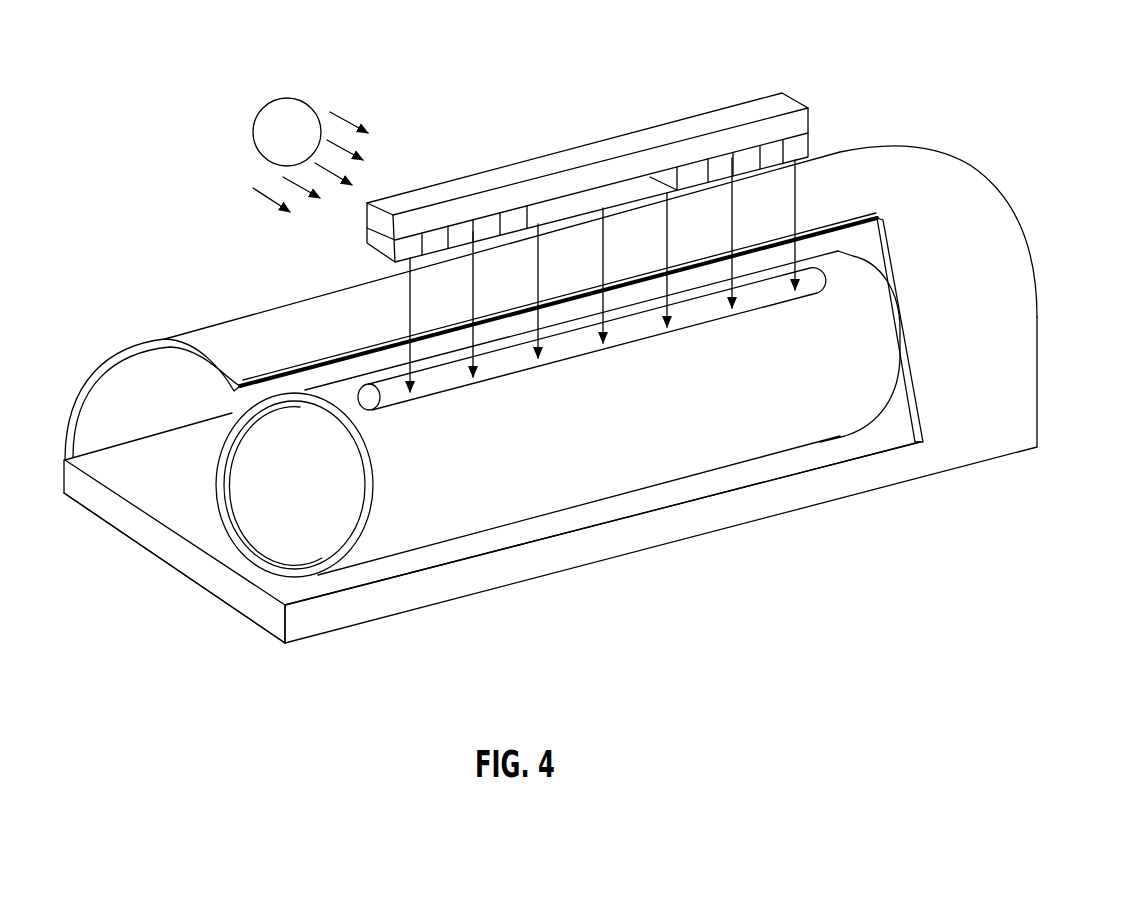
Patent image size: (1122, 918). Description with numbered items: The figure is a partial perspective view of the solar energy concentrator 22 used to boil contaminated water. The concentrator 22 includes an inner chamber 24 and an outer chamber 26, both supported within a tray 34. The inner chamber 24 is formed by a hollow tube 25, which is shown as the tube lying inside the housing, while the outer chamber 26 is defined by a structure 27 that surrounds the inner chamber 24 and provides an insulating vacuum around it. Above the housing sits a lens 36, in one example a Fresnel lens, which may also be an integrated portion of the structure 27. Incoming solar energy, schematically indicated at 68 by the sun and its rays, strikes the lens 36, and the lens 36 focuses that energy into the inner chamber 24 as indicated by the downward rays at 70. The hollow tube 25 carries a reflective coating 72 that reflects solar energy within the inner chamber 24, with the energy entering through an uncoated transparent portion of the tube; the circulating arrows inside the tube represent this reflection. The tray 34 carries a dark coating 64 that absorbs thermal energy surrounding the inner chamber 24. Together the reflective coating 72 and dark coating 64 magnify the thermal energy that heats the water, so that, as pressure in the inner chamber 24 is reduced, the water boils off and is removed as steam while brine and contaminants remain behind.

The solar energy concentrator 22 is at (607, 577).
The inner chamber 24 is at (286, 488).
The hollow tube 25 is at (465, 482).
The outer chamber 26 is at (118, 410).
The structure 27 is at (203, 348).
The tray 34 is at (188, 558).
The lens 36 is at (757, 112).
The dark coating 64 is at (200, 478).
The solar energy 68 is at (380, 188).
The focused solar energy 70 is at (810, 182).
The reflective coating 72 is at (240, 494).